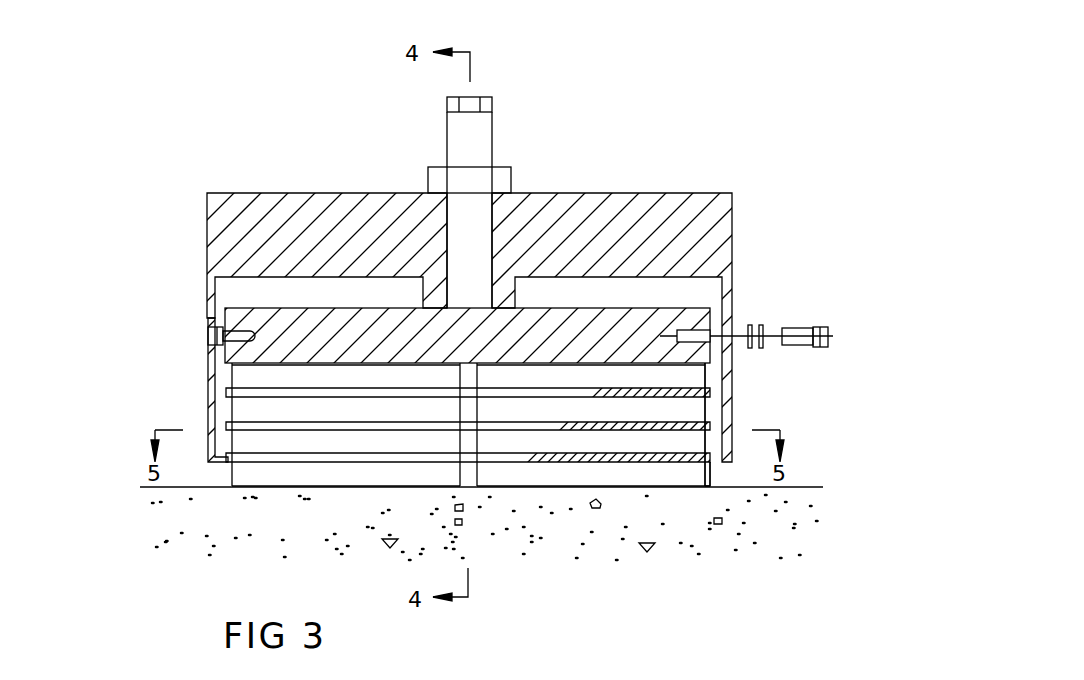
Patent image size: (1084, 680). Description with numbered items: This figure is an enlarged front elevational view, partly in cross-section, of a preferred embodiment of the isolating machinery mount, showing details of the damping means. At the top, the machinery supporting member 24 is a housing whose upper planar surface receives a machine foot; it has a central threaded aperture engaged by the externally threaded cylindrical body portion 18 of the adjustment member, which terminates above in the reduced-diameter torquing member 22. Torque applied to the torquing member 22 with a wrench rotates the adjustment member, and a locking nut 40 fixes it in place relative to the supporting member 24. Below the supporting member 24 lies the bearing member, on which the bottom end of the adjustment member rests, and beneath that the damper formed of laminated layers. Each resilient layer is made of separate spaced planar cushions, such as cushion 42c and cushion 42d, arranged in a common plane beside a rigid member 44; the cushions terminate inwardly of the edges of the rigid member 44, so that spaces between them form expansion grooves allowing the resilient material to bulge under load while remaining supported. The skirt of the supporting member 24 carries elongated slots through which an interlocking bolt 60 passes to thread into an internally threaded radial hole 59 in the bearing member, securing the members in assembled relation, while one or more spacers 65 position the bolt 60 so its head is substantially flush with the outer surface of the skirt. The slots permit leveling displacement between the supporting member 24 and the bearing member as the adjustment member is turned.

The externally threaded cylindrical body portion 18 is at (493, 142).
The torquing member 22 is at (493, 95).
The machinery supporting member 24 is at (673, 193).
The locking nut 40 is at (428, 170).
The cushion 42c is at (228, 410).
The cushion 42d is at (710, 408).
The rigid member 44 is at (227, 425).
The radial hole 59 is at (732, 292).
The interlocking bolt 60 is at (840, 317).
The spacer 65 is at (762, 325).